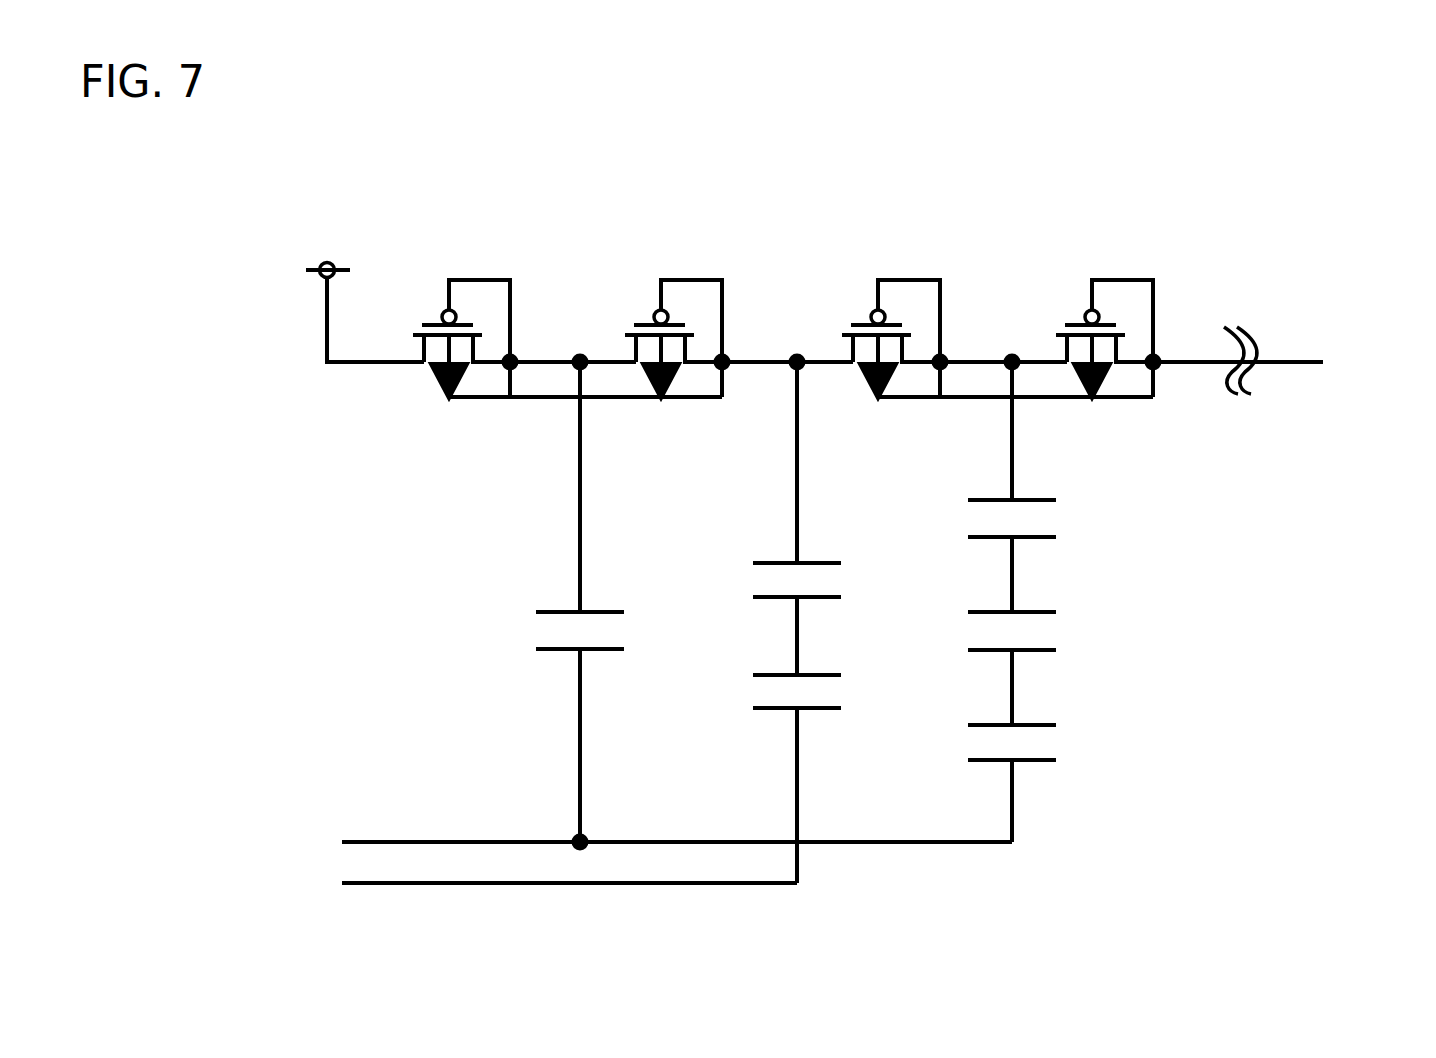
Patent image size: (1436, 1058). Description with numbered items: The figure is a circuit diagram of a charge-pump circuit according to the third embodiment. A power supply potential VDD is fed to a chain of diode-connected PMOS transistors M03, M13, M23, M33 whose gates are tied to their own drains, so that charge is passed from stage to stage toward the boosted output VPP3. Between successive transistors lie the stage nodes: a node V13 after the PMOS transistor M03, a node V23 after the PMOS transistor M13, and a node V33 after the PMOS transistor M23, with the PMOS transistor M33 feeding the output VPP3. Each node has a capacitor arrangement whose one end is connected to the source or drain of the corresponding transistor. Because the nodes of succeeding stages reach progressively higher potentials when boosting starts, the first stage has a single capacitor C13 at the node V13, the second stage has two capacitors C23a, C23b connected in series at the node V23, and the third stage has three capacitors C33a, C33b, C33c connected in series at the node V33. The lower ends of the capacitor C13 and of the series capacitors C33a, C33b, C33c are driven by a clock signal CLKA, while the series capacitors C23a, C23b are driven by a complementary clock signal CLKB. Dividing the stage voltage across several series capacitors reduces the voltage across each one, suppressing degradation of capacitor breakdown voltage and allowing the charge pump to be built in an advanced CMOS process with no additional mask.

The power supply potential VDD is at (357, 282).
The PMOS transistor M03 is at (496, 314).
The PMOS transistor M13 is at (619, 314).
The PMOS transistor M23 is at (867, 314).
The PMOS transistor M33 is at (1050, 314).
The node V13 is at (593, 458).
The node V23 is at (811, 433).
The node V33 is at (1024, 402).
The boosted output voltage VPP3 is at (1288, 360).
The capacitor C13 is at (537, 727).
The capacitor C23a is at (753, 618).
The capacitor C23b is at (753, 772).
The capacitor C33a is at (969, 553).
The capacitor C33b is at (969, 668).
The capacitor C33c is at (970, 781).
The clock signal CLKA is at (624, 840).
The clock signal CLKB is at (517, 888).